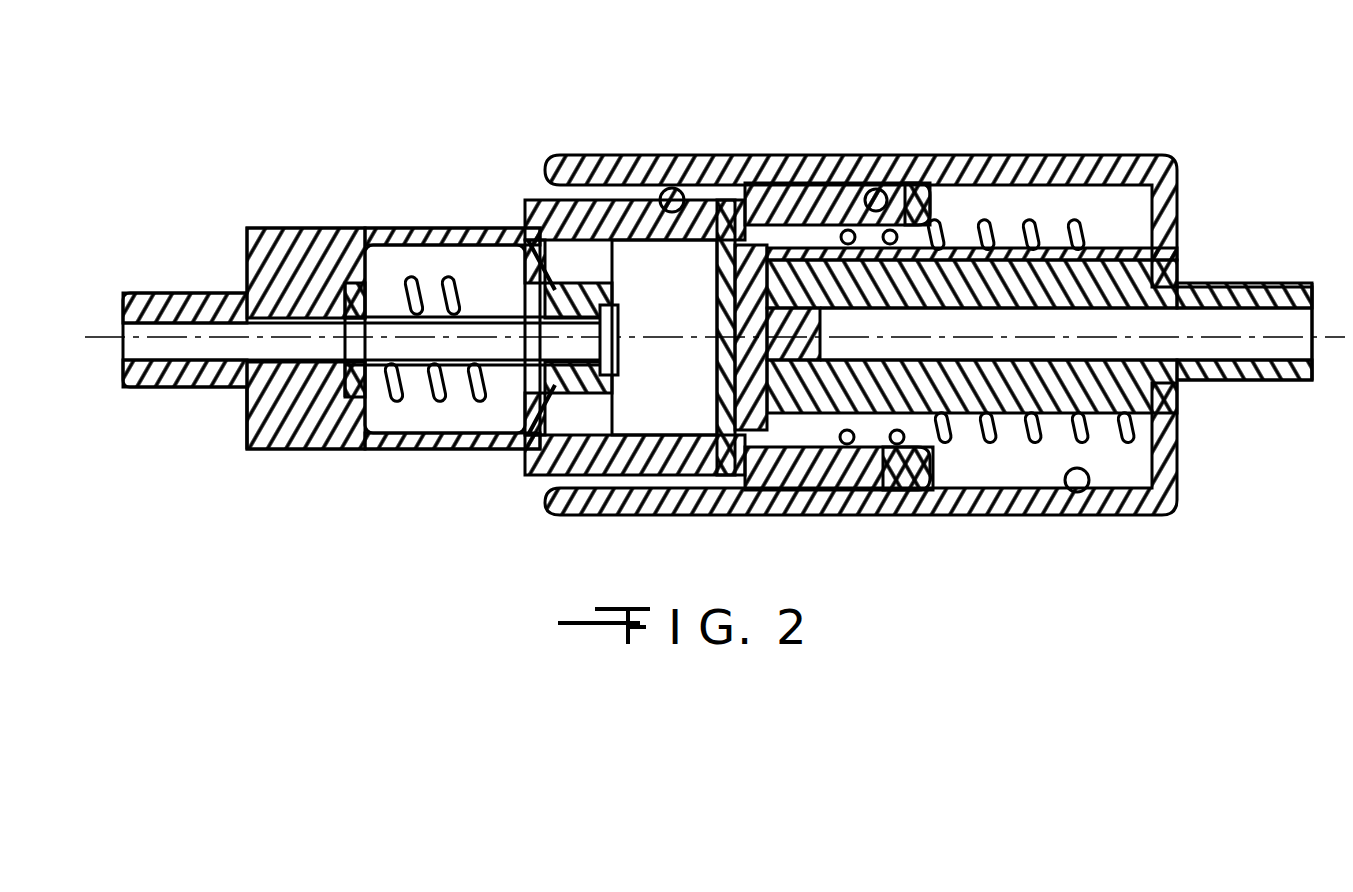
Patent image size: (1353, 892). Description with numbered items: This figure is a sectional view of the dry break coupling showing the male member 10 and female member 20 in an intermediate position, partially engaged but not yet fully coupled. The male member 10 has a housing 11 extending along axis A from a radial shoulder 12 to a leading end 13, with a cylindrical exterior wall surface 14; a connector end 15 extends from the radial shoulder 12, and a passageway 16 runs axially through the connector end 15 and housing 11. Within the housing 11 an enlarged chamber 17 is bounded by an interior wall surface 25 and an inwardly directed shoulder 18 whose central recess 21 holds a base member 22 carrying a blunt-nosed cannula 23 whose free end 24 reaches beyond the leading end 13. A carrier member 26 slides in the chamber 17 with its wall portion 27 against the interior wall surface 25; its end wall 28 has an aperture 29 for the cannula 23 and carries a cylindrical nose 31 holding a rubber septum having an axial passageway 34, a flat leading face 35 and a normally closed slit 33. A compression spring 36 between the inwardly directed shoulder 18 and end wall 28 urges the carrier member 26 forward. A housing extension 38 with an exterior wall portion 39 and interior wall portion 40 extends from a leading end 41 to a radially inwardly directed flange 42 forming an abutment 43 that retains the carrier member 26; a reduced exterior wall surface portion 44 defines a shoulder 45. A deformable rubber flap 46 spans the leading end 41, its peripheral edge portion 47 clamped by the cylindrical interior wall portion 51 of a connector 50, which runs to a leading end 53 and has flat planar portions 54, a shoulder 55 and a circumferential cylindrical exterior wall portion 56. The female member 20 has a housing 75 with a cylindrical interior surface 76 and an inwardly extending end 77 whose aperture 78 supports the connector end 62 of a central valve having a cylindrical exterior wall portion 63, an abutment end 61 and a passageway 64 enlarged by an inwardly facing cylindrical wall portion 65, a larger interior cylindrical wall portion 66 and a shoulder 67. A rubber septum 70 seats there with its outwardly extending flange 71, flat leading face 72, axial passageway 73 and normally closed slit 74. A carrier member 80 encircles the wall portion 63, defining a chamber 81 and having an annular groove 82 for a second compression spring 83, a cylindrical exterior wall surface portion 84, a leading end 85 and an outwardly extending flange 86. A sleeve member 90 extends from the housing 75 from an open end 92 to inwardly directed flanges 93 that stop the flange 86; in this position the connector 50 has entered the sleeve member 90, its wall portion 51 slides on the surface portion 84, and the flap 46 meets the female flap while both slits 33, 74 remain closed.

The male member 10 is at (350, 220).
The housing 11 is at (330, 400).
The radial shoulder 12 is at (247, 405).
The leading end 13 is at (520, 223).
The exterior wall surface 14 is at (297, 227).
The connector end 15 is at (207, 292).
The passageway 16 is at (122, 347).
The enlarged chamber 17 is at (430, 262).
The inwardly directed shoulder 18 is at (385, 228).
The female member 20 is at (1052, 146).
The central recess 21 is at (315, 385).
The base member 22 is at (333, 450).
The blunt-nosed cannula 23 is at (467, 447).
The free end 24 is at (570, 410).
The interior wall surface 25 is at (400, 413).
The carrier member 26 is at (580, 235).
The wall portion 27 is at (480, 230).
The end wall 28 is at (497, 430).
The aperture 29 is at (525, 315).
The cylindrical nose 31 is at (575, 290).
The normally closed slit 33 is at (618, 330).
The axial passageway 34 is at (618, 305).
The flat leading face 35 is at (618, 352).
The compression spring 36 is at (438, 410).
The housing extension 38 is at (540, 200).
The exterior wall portion 39 is at (553, 200).
The interior wall portion 40 is at (572, 478).
The leading end 41 is at (703, 435).
The radially inwardly directed flange 42 is at (530, 463).
The abutment 43 is at (525, 295).
The exterior wall surface portion 44 is at (630, 490).
The shoulder 45 is at (635, 205).
The deformable rubber flap 46 is at (712, 262).
The peripheral edge portion 47 is at (735, 195).
The connector 50 is at (798, 188).
The cylindrical interior wall portion 51 is at (777, 513).
The leading end 53 is at (860, 480).
The flat planar portions 54 is at (820, 160).
The shoulder 55 is at (718, 205).
The circumferential cylindrical exterior wall portion 56 is at (665, 190).
The abutment end 61 is at (853, 390).
The connector end 62 is at (1240, 283).
The cylindrical exterior wall portion 63 is at (1053, 250).
The passageway 64 is at (1062, 350).
The inwardly facing cylindrical wall portion 65 is at (905, 373).
The larger interior cylindrical wall portion 66 is at (912, 300).
The shoulder 67 is at (900, 380).
The rubber septum 70 is at (803, 373).
The outwardly extending flange 71 is at (778, 190).
The flat leading face 72 is at (715, 380).
The axial passageway 73 is at (803, 340).
The normally closed slit 74 is at (715, 312).
The housing 75 is at (1160, 513).
The cylindrical interior surface 76 is at (1067, 513).
The radially inwardly extending end 77 is at (1170, 447).
The aperture 78 is at (1173, 247).
The carrier member 80 is at (1037, 152).
The chamber 81 is at (1147, 513).
The annular groove 82 is at (980, 517).
The second compression spring 83 is at (1030, 447).
The cylindrical exterior wall surface portion 84 is at (872, 153).
The leading end 85 is at (803, 490).
The outwardly extending flange 86 is at (973, 152).
The sleeve member 90 is at (590, 152).
The open end 92 is at (560, 165).
The inwardly directed flanges 93 is at (887, 153).
The axis A is at (1325, 340).